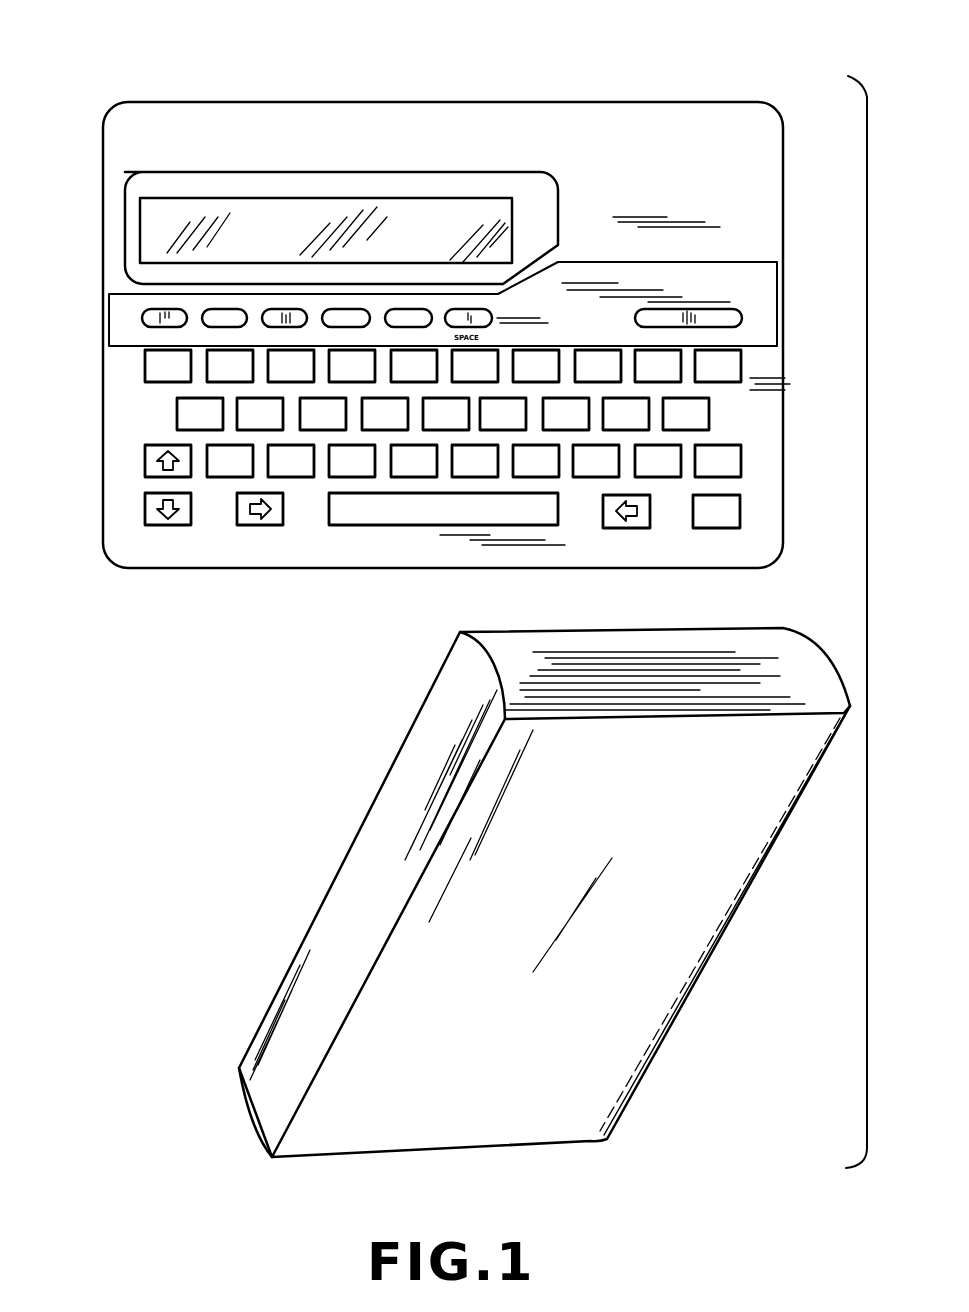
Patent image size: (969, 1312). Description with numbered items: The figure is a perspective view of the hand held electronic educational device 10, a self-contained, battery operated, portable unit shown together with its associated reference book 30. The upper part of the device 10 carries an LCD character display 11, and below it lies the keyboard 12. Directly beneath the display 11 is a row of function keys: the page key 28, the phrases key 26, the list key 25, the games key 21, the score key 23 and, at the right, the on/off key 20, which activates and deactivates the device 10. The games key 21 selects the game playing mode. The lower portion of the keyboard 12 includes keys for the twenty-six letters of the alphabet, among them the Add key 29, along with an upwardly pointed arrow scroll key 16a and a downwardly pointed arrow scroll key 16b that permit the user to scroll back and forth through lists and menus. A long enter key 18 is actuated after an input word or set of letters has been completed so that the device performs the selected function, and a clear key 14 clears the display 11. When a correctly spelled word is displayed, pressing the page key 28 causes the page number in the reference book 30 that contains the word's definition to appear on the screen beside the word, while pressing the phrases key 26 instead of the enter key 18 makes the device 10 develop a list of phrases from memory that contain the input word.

The hand held electronic educational device 10 is at (538, 66).
The LCD character display 11 is at (332, 210).
The keyboard 12 is at (397, 479).
The clear key 14 is at (715, 522).
The upwardly pointed arrow scroll key 16a is at (145, 463).
The downwardly pointed arrow scroll key 16b is at (145, 503).
The enter key 18 is at (473, 515).
The on/off key 20 is at (732, 313).
The games key 21 is at (350, 316).
The score key 23 is at (413, 316).
The list key 25 is at (290, 316).
The phrases key 26 is at (217, 316).
The page key 28 is at (142, 318).
The Add key 29 is at (145, 362).
The reference book 30 is at (422, 840).